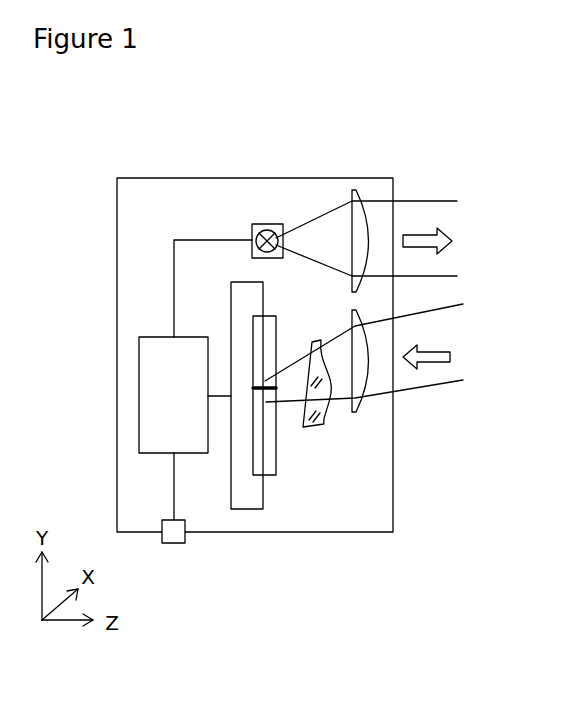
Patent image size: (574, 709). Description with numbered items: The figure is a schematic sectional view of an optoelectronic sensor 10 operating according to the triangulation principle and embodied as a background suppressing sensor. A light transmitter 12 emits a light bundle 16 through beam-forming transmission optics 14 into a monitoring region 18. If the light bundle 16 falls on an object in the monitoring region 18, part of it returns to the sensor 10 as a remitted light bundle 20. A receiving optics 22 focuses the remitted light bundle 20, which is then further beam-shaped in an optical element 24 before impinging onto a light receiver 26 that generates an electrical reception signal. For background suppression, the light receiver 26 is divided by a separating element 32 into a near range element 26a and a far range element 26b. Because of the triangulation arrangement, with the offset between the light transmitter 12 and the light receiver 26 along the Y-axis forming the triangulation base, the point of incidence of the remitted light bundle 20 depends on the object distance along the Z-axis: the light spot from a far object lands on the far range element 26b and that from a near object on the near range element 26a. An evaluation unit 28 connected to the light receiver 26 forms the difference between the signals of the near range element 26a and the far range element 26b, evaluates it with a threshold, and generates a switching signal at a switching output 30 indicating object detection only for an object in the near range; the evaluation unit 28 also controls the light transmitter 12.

The optoelectronic sensor 10 is at (255, 294).
The light transmitter 12 is at (241, 198).
The transmission optics 14 is at (369, 207).
The light bundle 16 is at (404, 215).
The monitoring region 18 is at (487, 130).
The remitted light bundle 20 is at (374, 395).
The receiving optics 22 is at (393, 381).
The optical element 24 is at (335, 399).
The light receiver 26 is at (269, 407).
The near range element 26a is at (305, 442).
The far range element 26b is at (289, 337).
The evaluation unit 28 is at (165, 370).
The switching output 30 is at (195, 553).
The separating element 32 is at (230, 337).